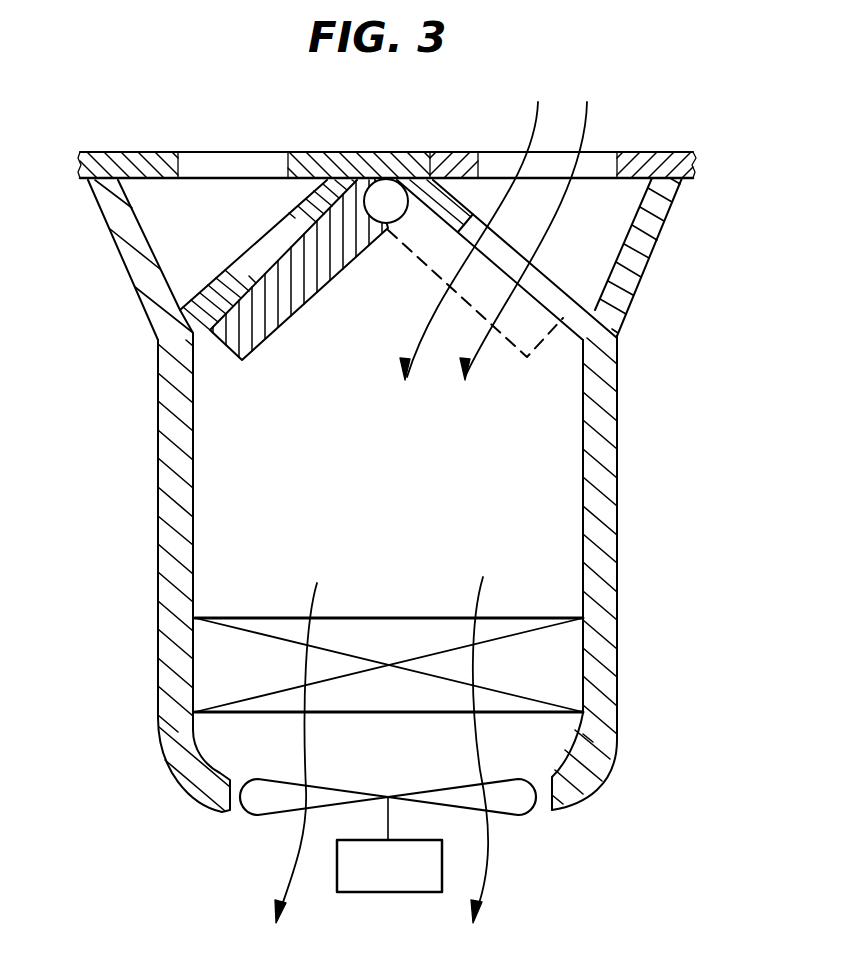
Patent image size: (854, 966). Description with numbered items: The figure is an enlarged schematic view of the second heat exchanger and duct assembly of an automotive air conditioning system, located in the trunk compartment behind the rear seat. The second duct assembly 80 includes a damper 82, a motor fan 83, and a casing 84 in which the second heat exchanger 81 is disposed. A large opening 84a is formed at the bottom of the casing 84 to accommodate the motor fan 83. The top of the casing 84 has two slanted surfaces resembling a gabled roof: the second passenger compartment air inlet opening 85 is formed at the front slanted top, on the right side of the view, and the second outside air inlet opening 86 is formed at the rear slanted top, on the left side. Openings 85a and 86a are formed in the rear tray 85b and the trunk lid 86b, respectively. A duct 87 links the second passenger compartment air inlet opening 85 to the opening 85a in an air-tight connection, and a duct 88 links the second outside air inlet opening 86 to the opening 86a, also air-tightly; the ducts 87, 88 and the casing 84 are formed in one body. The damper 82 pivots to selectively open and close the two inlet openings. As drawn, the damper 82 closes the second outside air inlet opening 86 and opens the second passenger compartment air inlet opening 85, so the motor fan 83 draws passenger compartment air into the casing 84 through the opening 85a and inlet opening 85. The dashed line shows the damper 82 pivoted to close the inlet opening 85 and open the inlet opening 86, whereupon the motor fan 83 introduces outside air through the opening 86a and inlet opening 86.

The second duct assembly 80 is at (158, 545).
The second heat exchanger 81 is at (207, 683).
The damper 82 is at (299, 293).
The motor fan 83 is at (253, 809).
The casing 84 is at (613, 542).
The large opening 84a is at (543, 807).
The second passenger compartment air inlet opening 85 is at (548, 293).
The opening 85a is at (603, 150).
The rear tray 85b is at (663, 152).
The second outside air inlet opening 86 is at (224, 288).
The opening 86a is at (288, 152).
The trunk lid 86b is at (160, 152).
The duct 87 is at (652, 238).
The duct 88 is at (118, 234).